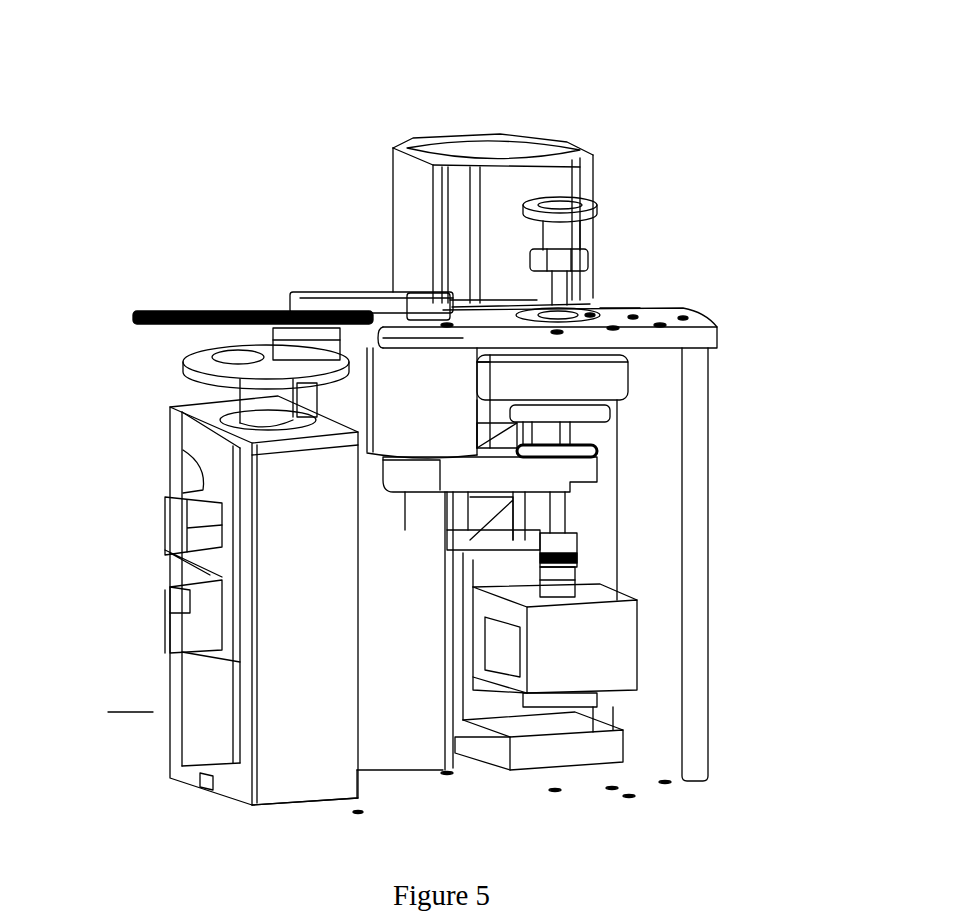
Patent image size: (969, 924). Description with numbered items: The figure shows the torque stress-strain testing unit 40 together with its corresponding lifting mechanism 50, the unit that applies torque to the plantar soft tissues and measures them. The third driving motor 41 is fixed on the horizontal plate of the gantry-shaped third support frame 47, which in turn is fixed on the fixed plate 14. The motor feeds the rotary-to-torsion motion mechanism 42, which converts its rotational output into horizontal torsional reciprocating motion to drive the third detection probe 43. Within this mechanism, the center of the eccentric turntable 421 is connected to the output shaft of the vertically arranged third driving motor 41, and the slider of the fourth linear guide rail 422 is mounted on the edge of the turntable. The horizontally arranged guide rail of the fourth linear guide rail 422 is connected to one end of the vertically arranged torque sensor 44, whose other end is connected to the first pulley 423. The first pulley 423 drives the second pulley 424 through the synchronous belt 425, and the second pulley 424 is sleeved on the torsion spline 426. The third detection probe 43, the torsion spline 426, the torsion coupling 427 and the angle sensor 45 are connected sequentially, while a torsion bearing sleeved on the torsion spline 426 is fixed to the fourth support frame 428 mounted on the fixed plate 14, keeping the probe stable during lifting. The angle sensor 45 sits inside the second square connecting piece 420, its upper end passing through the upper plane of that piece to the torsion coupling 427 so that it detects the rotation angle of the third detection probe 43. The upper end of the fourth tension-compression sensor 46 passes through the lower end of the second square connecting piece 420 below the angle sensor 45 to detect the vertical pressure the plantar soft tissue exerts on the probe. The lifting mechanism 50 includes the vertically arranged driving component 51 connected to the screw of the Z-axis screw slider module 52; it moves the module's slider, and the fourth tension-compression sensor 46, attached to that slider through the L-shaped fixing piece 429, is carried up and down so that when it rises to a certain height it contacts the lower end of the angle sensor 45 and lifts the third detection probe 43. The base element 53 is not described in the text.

The fixed plate 14 is at (177, 820).
The torque stress-strain testing unit 40 is at (228, 246).
The third driving motor 41 is at (160, 530).
The rotary-to-torsion motion mechanism 42 is at (720, 298).
The third detection probe 43 is at (575, 208).
The torque sensor 44 is at (411, 397).
The angle sensor 45 is at (577, 592).
The fourth tension-compression sensor 46 is at (627, 707).
The third support frame 47 is at (157, 403).
The lifting mechanism 50 is at (521, 95).
The driving component 51 is at (550, 148).
The Z-axis screw slider module 52 is at (535, 472).
The base plate 53 is at (557, 753).
The second square connecting piece 420 is at (570, 653).
The eccentric turntable 421 is at (273, 347).
The fourth linear guide rail 422 is at (190, 311).
The first pulley 423 is at (403, 400).
The second pulley 424 is at (597, 470).
The synchronous belt 425 is at (612, 465).
The torsion spline 426 is at (563, 532).
The torsion coupling 427 is at (583, 557).
The fourth support frame 428 is at (648, 307).
The L-shaped fixing piece 429 is at (483, 742).